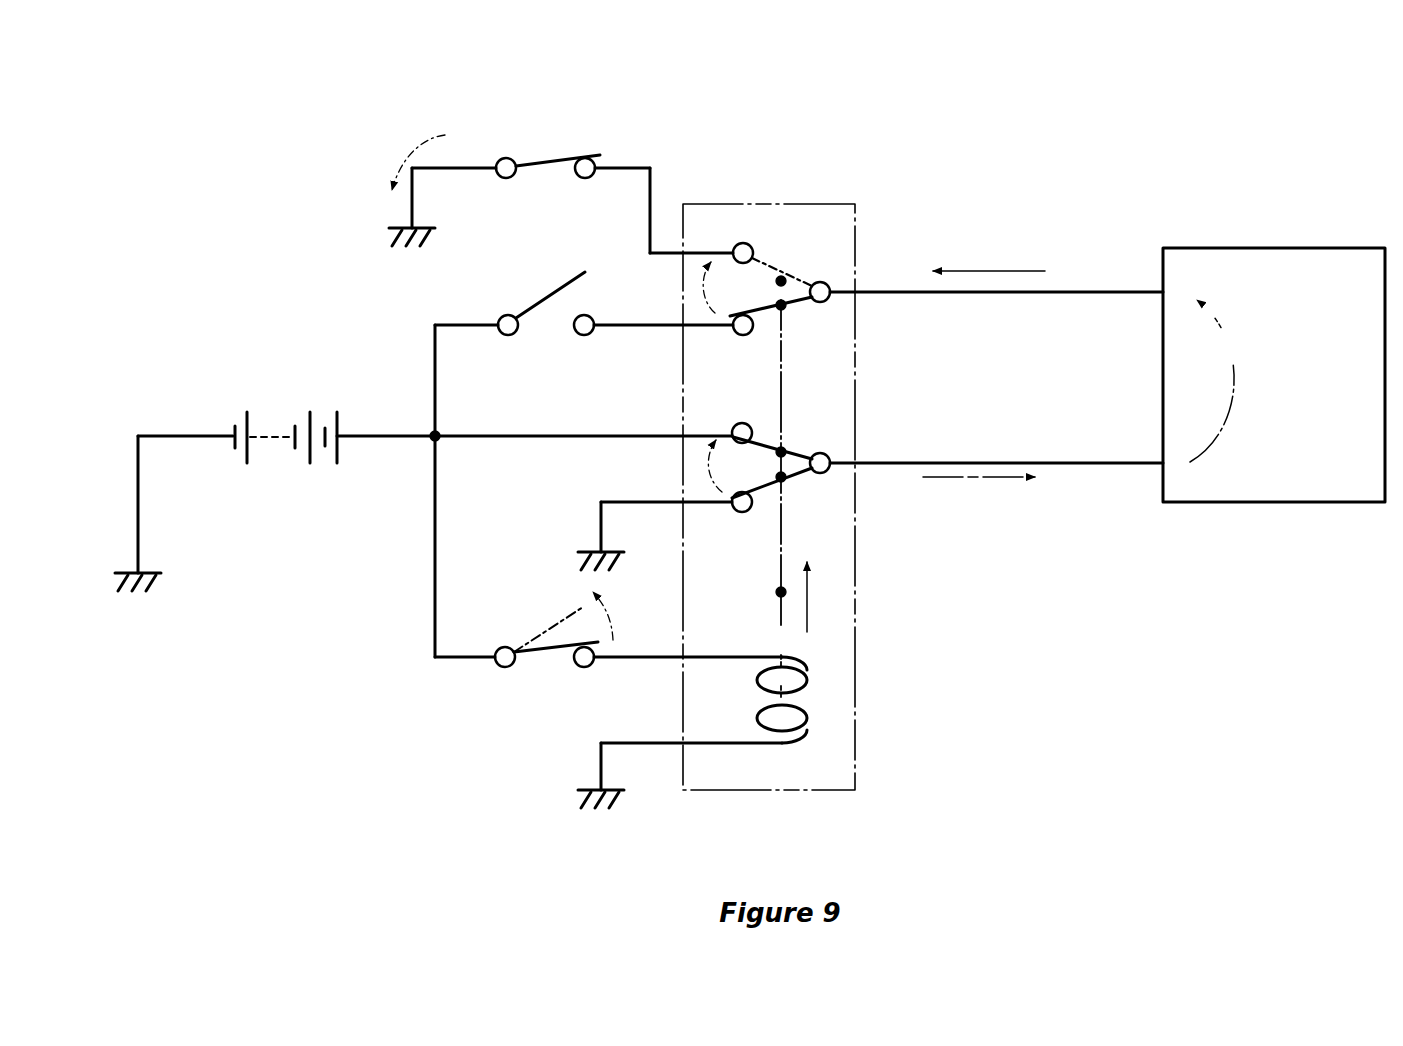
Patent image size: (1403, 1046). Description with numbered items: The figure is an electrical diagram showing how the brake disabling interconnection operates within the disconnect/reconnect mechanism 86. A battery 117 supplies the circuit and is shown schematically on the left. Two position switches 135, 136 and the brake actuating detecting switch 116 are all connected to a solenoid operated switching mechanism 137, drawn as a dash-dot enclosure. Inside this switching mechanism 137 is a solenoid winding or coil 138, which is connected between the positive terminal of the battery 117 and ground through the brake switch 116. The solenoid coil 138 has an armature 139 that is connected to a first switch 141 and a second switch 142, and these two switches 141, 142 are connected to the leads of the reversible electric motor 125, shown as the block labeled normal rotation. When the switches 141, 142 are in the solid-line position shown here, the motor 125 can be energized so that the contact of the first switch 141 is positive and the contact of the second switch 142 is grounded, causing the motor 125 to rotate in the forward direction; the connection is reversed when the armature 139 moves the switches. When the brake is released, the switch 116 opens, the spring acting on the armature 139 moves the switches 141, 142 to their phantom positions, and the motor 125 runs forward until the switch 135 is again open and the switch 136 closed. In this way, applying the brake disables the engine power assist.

The disconnect/reconnect mechanism 86 is at (1123, 178).
The sensor switch 116 is at (548, 645).
The battery 117 is at (275, 415).
The reversible electric motor 125 is at (1245, 503).
The switch 135 is at (543, 157).
The switch 136 is at (540, 292).
The solenoid operated switching mechanism 137 is at (858, 567).
The solenoid winding or coil 138 is at (810, 703).
The armature 139 is at (786, 592).
The first switch 141 is at (828, 455).
The second switch 142 is at (826, 286).